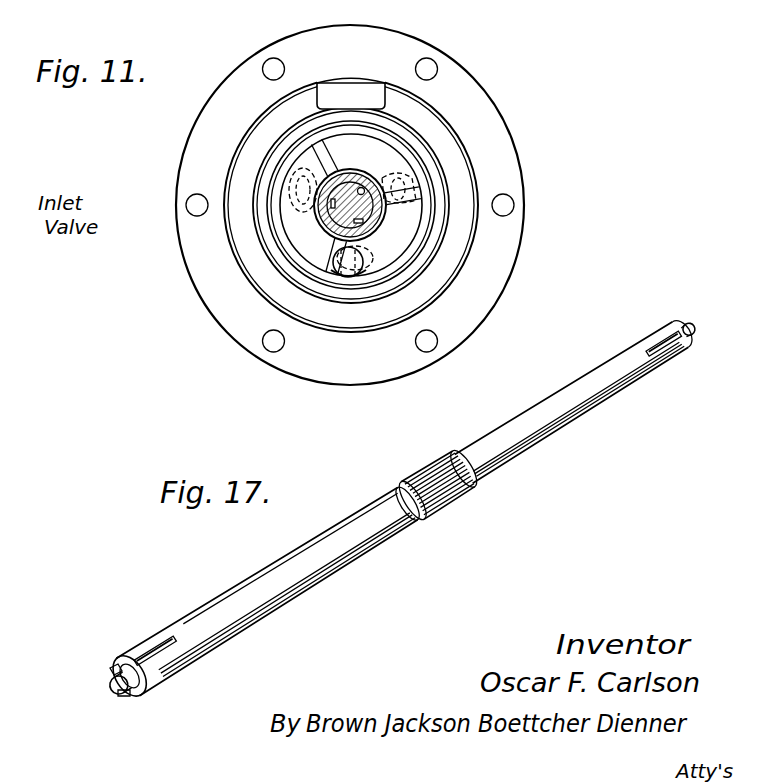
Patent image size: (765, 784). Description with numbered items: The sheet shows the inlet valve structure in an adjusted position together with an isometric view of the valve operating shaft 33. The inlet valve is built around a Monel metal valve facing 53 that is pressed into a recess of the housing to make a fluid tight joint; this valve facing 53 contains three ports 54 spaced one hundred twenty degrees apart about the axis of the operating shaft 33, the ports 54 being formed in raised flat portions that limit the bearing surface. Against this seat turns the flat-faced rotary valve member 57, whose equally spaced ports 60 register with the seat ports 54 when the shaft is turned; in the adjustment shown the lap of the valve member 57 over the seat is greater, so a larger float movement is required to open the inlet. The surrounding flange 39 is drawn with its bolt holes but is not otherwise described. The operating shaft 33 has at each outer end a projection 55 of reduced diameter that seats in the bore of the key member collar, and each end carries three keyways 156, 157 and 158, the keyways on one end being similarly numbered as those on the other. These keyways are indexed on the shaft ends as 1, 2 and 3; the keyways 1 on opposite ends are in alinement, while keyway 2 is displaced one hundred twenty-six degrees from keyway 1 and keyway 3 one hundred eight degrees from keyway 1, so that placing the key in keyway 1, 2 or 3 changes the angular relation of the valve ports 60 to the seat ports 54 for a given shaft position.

In FIG. 11, the keyway index numeral 1 is at (240, 209).
In FIG. 11, the keyway index numeral 2 is at (406, 109).
In FIG. 11, the keyway index numeral 3 is at (408, 301).
In FIG. 11, the operating shaft 33 is at (366, 207).
In FIG. 17, the operating shaft 33 is at (384, 528).
In FIG. 11, the valve housing flange 39 is at (474, 93).
In FIG. 11, the valve facing 53 is at (300, 147).
In FIG. 11, the port 54 is at (322, 192).
In FIG. 17, the projection 55 is at (697, 325).
In FIG. 11, the rotary valve member 57 is at (362, 148).
In FIG. 11, the port 60 is at (400, 208).
In FIG. 17, the keyway 156 is at (664, 340).
In FIG. 17, the keyway 157 is at (112, 670).
In FIG. 17, the keyway 158 is at (124, 697).